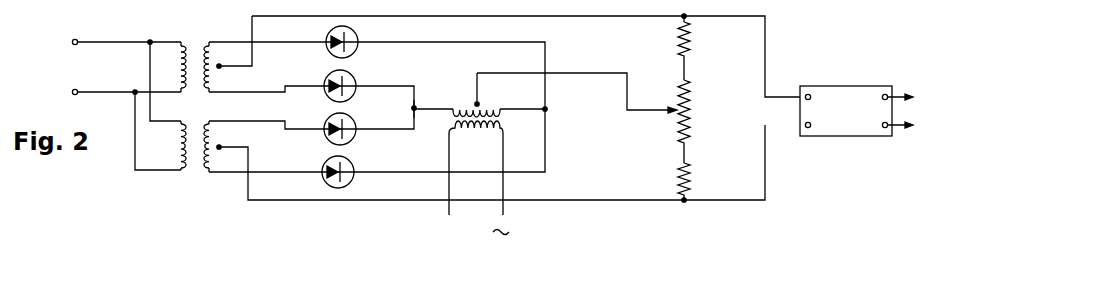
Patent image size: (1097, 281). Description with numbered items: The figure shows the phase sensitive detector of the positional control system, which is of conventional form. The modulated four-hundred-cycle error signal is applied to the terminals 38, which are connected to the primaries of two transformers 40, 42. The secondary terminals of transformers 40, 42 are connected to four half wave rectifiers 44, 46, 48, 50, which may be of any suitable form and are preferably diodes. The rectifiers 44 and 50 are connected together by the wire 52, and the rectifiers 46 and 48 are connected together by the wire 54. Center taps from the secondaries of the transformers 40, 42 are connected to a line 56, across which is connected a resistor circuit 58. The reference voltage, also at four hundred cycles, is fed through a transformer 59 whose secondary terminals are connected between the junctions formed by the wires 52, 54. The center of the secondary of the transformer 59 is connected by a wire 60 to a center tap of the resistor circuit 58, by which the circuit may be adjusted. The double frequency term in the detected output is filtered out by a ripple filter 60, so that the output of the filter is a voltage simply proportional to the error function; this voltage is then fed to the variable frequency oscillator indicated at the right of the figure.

The terminals 38 is at (92, 72).
The transformer 40 is at (194, 48).
The transformer 42 is at (188, 158).
The half wave rectifier 44 is at (358, 33).
The half wave rectifier 46 is at (356, 76).
The half wave rectifier 48 is at (355, 139).
The half wave rectifier 50 is at (352, 181).
The wire 52 is at (547, 56).
The wire 54 is at (414, 122).
The line 56 is at (728, 22).
The resistor circuit 58 is at (676, 130).
The transformer 59 is at (498, 121).
The wire 60 is at (591, 78).